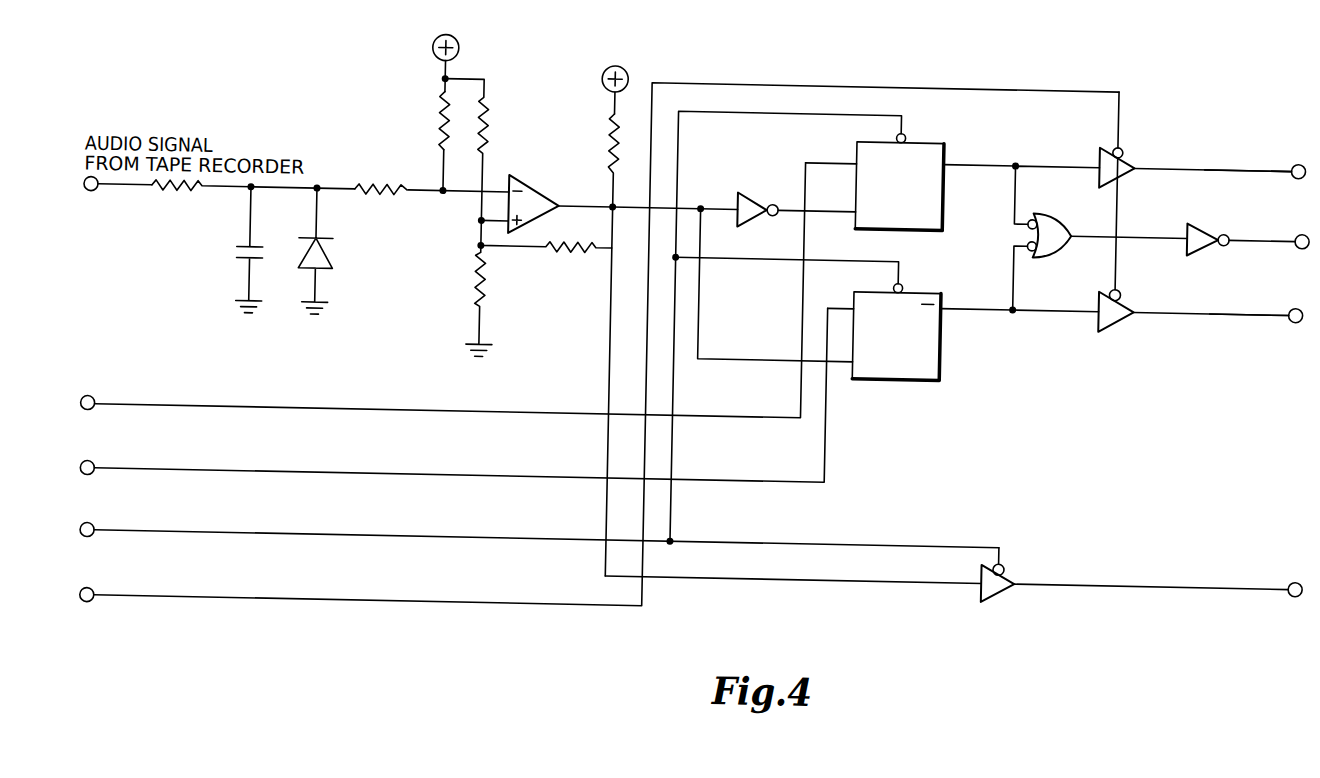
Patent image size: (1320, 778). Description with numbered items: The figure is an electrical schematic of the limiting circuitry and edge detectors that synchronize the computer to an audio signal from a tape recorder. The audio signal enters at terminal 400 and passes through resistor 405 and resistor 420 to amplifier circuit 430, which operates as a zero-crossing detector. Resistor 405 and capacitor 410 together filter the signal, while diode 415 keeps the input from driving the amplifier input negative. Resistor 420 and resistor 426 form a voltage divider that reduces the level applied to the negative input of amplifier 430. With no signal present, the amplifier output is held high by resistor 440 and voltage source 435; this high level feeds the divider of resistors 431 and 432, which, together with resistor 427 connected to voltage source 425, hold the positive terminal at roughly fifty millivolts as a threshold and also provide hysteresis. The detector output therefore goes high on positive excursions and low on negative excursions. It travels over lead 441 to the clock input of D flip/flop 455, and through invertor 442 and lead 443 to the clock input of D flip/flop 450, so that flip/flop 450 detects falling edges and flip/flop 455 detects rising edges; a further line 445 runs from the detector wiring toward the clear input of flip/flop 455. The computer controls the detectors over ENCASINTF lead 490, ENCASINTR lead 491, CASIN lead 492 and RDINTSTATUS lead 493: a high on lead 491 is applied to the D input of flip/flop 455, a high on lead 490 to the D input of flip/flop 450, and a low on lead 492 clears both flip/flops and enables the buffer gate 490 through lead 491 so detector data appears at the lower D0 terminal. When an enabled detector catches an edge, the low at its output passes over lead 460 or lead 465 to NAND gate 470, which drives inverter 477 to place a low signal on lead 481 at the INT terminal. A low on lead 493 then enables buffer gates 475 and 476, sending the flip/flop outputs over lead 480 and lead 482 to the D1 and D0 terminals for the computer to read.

The terminal 400 is at (92, 201).
The resistor 405 is at (178, 199).
The capacitor 410 is at (236, 268).
The diode 415 is at (331, 258).
The resistor 420 is at (381, 197).
The voltage source 425 is at (449, 45).
The resistor 426 is at (438, 121).
The resistor 427 is at (487, 129).
The amplifier circuit 430 is at (537, 188).
The resistor 431 is at (545, 254).
The resistor 432 is at (480, 290).
The voltage source 435 is at (616, 69).
The resistor 440 is at (608, 154).
The lead 441 is at (698, 205).
The invertor 442 is at (762, 180).
The lead 443 is at (817, 212).
The clear line of flip-flop 455 445 is at (724, 259).
The D flip/flop 450 is at (919, 138).
The D flip/flop 455 is at (911, 288).
The lead 460 is at (1037, 158).
The lead 465 is at (1041, 302).
The NAND gate 470 is at (1054, 217).
The buffer gate 475 is at (1125, 151).
The buffer gate 476 is at (1128, 293).
The inverter 477 is at (1197, 224).
The lead 480 is at (1202, 158).
The lead 481 is at (1280, 231).
The lead 482 is at (1209, 302).
The ENCASINTF lead 490 is at (327, 416).
The ENCASINTR lead 491 is at (325, 480).
The CASIN lead 492 is at (325, 542).
The RDINTSTATUS lead 493 is at (325, 607).